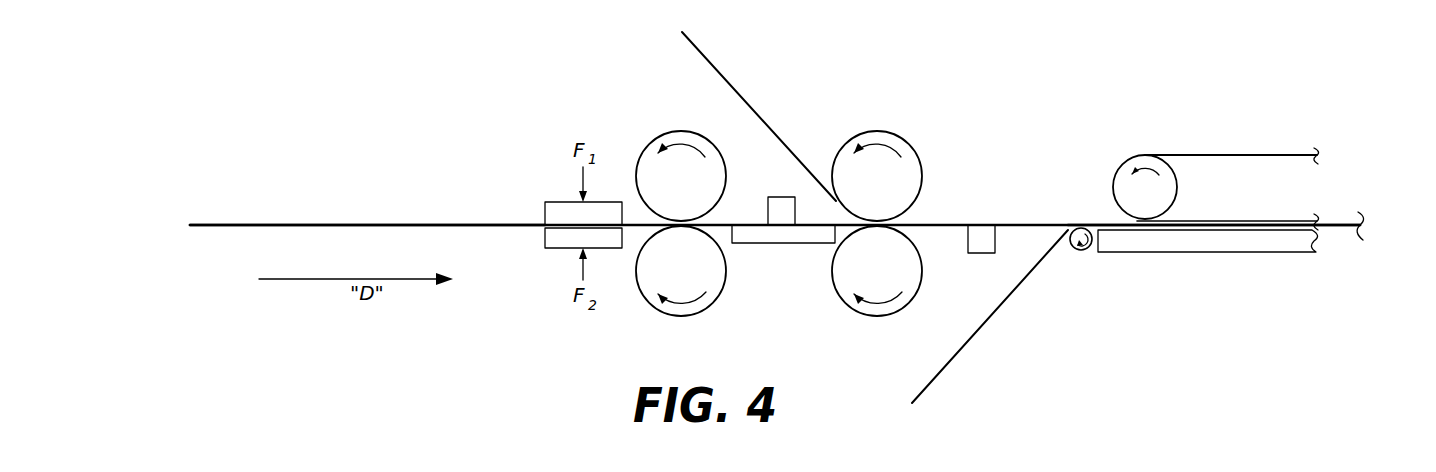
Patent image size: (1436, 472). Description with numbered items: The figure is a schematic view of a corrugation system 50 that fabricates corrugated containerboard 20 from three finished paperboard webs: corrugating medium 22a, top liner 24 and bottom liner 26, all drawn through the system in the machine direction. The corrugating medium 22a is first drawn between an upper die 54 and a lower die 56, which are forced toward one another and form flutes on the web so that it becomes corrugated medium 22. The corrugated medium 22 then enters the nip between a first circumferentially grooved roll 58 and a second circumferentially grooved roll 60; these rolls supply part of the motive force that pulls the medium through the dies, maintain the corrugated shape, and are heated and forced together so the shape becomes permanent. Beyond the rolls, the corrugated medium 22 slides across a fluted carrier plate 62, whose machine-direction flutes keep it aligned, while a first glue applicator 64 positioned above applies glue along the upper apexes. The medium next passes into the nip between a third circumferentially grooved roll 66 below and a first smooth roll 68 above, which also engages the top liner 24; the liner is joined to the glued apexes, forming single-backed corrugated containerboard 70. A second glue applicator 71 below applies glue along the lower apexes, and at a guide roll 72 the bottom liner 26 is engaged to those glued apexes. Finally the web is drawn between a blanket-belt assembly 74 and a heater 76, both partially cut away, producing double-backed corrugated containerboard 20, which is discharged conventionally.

The corrugated containerboard 20 is at (1345, 232).
The corrugated medium 22 is at (636, 229).
The corrugating medium 22a is at (267, 223).
The top liner 24 is at (707, 57).
The bottom liner 26 is at (960, 352).
The corrugation system 50 is at (1040, 76).
The upper die 54 is at (555, 202).
The lower die 56 is at (556, 249).
The first circumferentially grooved roll 58 is at (680, 132).
The second circumferentially grooved roll 60 is at (680, 317).
The fluted carrier plate 62 is at (780, 247).
The first glue applicator 64 is at (783, 197).
The third circumferentially grooved roll 66 is at (878, 316).
The first smooth roll 68 is at (878, 132).
The single-backed corrugated containerboard 70 is at (948, 222).
The second glue applicator 71 is at (985, 253).
The guide roll 72 is at (1088, 250).
The blanket-belt assembly 74 is at (1165, 148).
The heater 76 is at (1183, 253).